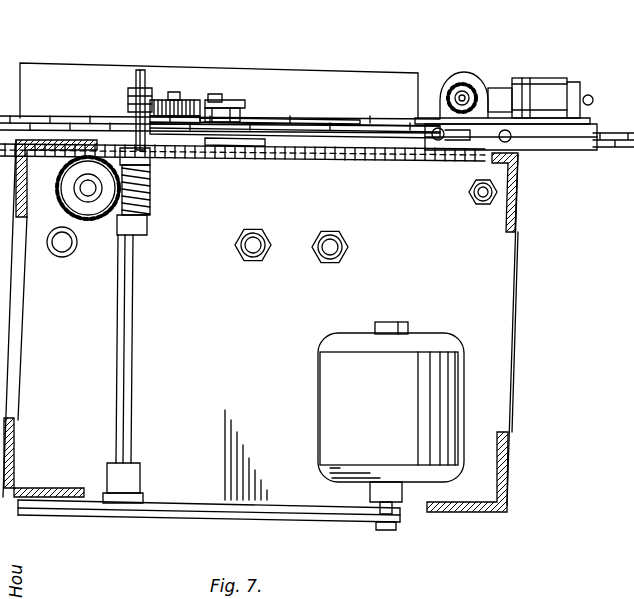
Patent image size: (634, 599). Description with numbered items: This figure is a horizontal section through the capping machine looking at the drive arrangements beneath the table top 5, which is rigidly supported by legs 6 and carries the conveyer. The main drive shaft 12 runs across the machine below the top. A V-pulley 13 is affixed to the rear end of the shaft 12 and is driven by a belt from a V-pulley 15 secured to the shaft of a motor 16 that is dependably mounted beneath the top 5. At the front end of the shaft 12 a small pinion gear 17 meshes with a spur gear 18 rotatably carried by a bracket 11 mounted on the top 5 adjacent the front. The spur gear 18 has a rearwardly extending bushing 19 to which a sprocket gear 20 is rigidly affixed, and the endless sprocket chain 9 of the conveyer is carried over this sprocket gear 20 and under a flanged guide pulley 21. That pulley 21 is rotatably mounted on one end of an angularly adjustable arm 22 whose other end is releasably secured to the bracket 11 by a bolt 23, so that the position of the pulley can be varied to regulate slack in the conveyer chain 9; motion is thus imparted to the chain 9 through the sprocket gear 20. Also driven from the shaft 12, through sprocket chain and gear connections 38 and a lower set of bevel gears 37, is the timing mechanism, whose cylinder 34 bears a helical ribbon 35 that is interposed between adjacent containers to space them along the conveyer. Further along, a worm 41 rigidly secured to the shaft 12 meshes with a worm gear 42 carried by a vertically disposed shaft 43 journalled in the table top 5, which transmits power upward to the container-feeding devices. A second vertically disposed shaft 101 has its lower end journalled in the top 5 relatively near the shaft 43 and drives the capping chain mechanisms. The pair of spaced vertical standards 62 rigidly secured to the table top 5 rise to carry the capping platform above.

The table top 5 is at (508, 300).
The legs 6 is at (512, 186).
The endless sprocket chain 9 is at (40, 117).
The bracket 11 is at (238, 101).
The shaft 12 is at (132, 344).
The V-pulley 13 is at (64, 517).
The V-pulley 15 is at (400, 524).
The motor 16 is at (330, 384).
The pinion gear 17 is at (134, 100).
The spur gear 18 is at (152, 108).
The bushing 19 is at (196, 82).
The sprocket gear 20 is at (160, 146).
The flanged guide pulley 21 is at (240, 147).
The angularly adjustable arm 22 is at (242, 115).
The bolt 23 is at (210, 97).
The cylinder 34 is at (563, 82).
The helical ribbon 35 is at (527, 112).
The lower set of bevel gears 37 is at (481, 80).
The sprocket chain and gear connections 38 is at (399, 168).
The worm 41 is at (150, 210).
The worm gear 42 is at (66, 214).
The shaft 43 is at (86, 188).
The vertical standards 62 is at (320, 256).
The shaft 101 is at (58, 248).